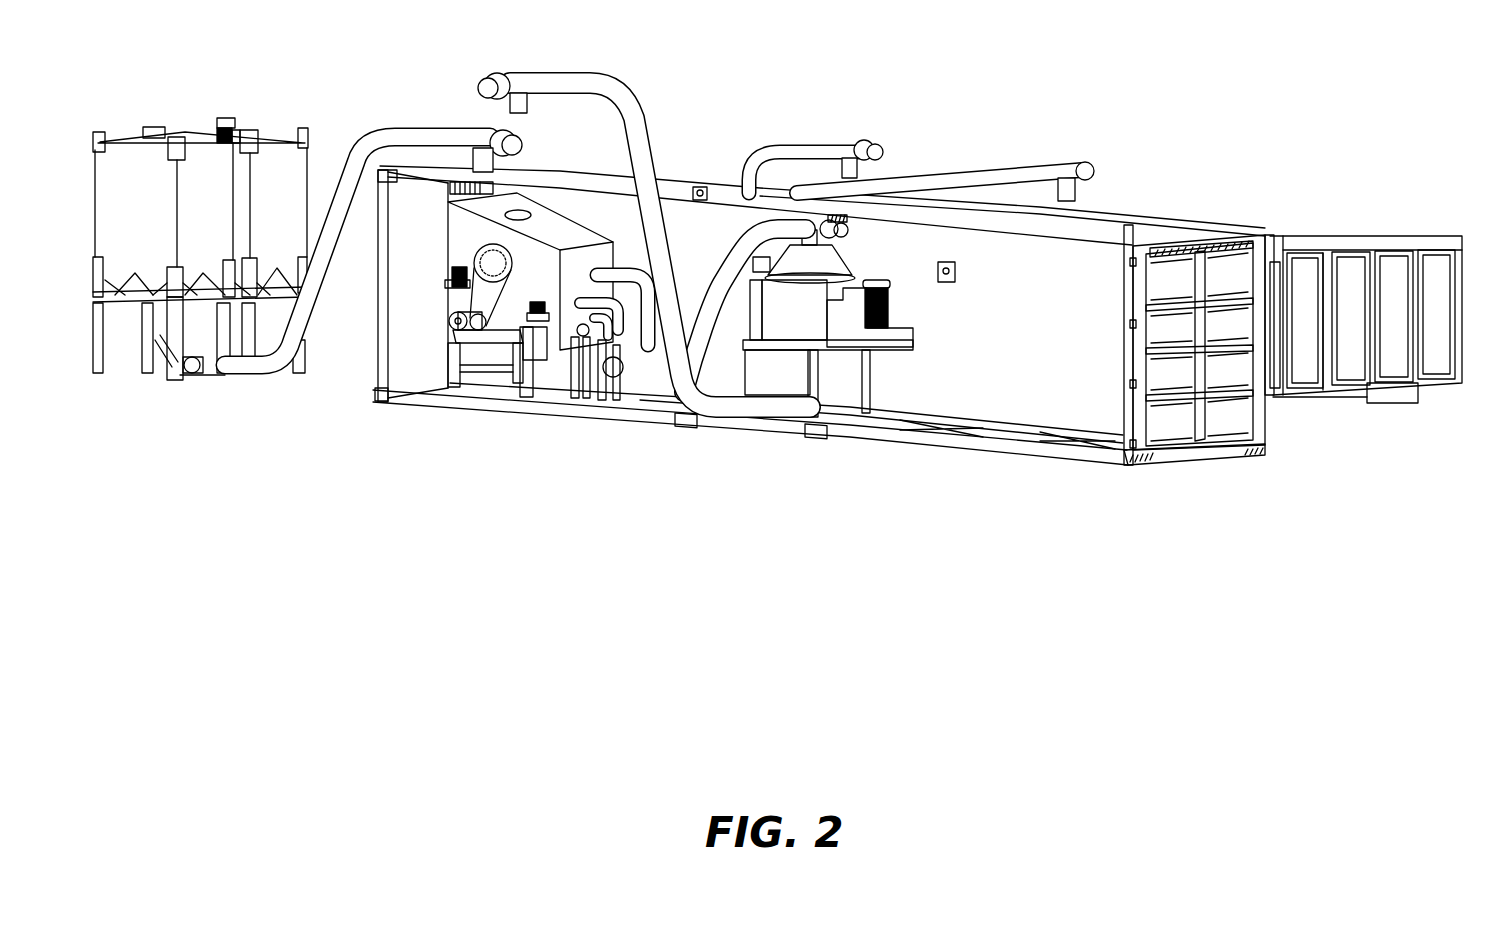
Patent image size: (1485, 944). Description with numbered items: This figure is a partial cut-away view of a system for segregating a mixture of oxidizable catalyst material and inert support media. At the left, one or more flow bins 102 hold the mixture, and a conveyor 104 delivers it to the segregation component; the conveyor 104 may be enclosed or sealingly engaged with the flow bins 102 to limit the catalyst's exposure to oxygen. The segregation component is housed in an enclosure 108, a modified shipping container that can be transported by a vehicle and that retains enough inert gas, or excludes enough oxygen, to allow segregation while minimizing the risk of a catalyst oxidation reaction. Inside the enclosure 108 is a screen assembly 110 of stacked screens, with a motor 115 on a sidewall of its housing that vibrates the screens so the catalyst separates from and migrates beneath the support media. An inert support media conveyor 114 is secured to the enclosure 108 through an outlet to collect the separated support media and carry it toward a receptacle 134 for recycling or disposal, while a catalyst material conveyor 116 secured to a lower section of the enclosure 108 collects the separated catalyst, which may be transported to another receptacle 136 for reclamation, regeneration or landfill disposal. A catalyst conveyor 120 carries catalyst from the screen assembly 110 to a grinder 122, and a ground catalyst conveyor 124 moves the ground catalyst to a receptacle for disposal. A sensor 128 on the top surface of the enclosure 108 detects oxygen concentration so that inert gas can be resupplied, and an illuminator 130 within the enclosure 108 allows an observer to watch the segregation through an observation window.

The flow bin 102 is at (198, 127).
The conveyor 104 is at (437, 140).
The enclosure 108 is at (1173, 460).
The screen assembly 110 is at (457, 230).
The inert support media conveyor 114 is at (797, 153).
The motor 115 is at (473, 303).
The catalyst material conveyor 116 is at (990, 177).
The catalyst conveyor 120 is at (797, 228).
The grinder 122 is at (828, 323).
The ground catalyst conveyor 124 is at (637, 133).
The sensor 128 is at (700, 187).
The illuminator 130 is at (947, 283).
The receptacle 134 is at (1277, 395).
The receptacle 136 is at (1392, 383).